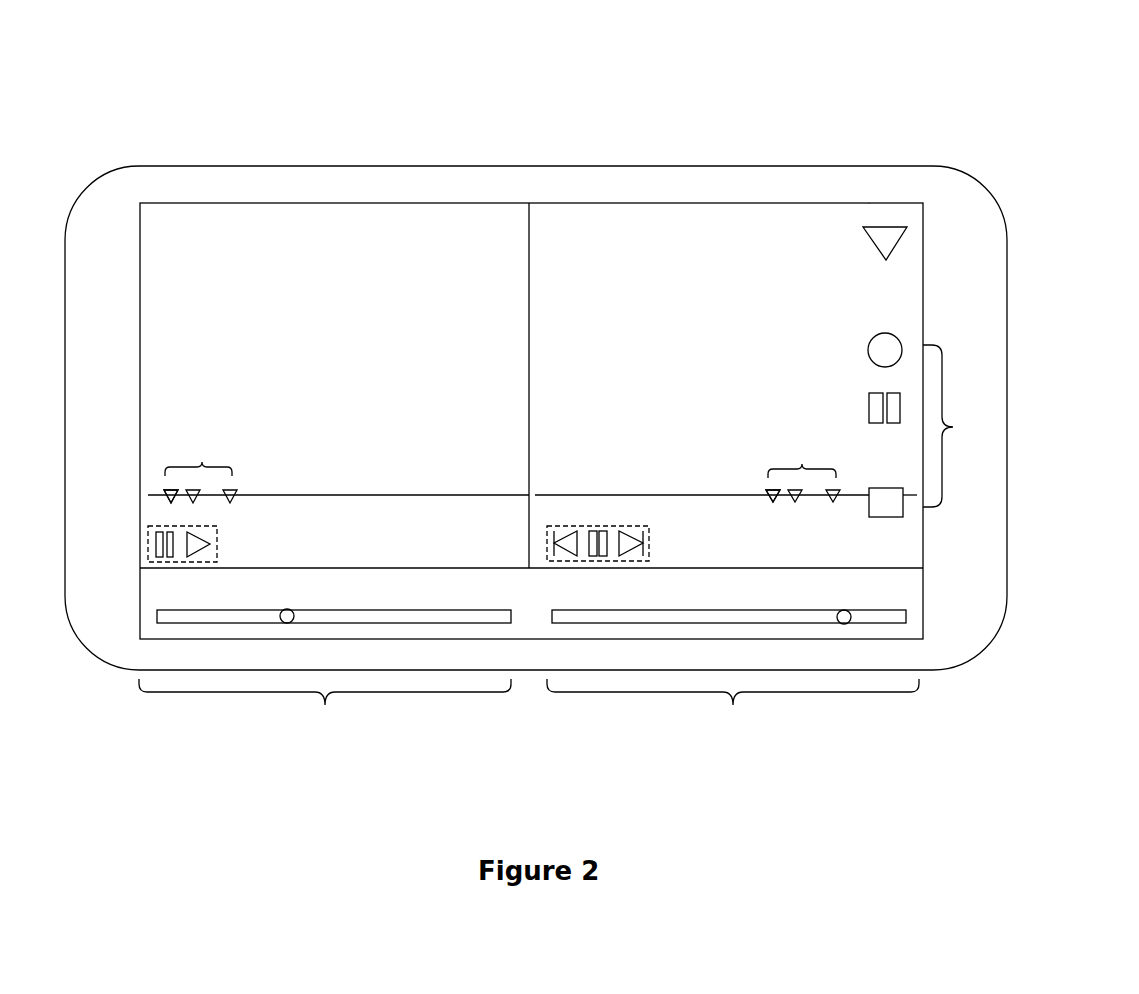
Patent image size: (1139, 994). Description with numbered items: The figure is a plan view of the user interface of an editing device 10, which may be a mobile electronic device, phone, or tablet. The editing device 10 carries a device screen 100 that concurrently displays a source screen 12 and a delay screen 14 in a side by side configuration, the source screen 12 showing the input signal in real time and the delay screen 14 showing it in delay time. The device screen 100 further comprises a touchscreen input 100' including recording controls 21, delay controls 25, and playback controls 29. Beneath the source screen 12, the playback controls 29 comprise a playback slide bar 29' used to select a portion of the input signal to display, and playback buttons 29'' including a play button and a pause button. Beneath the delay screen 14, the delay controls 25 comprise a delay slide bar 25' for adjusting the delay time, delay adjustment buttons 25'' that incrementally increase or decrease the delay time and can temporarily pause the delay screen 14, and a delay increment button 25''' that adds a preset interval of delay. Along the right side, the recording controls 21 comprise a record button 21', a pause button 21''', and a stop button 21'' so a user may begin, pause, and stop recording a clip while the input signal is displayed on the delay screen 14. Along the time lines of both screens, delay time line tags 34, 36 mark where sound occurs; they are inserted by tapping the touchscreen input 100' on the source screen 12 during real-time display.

The editing device 10 is at (994, 137).
The device screen 100 is at (461, 421).
The touchscreen input 100' is at (1000, 252).
The source screen 12 is at (342, 220).
The delay screen 14 is at (637, 220).
The recording controls 21 is at (957, 426).
The record button 21' is at (980, 346).
The stop button 21'' is at (987, 497).
The pause button 21''' is at (987, 402).
The delay controls 25 is at (733, 709).
The delay slide bar 25' is at (768, 662).
The delay adjustment buttons 25'' is at (582, 639).
The delay increment button 25''' is at (984, 227).
The playback controls 29 is at (325, 710).
The playback slide bar 29' is at (334, 668).
The playback buttons 29'' is at (146, 632).
The delay time line tag 34 is at (494, 471).
The delay time line tag 36 is at (472, 496).